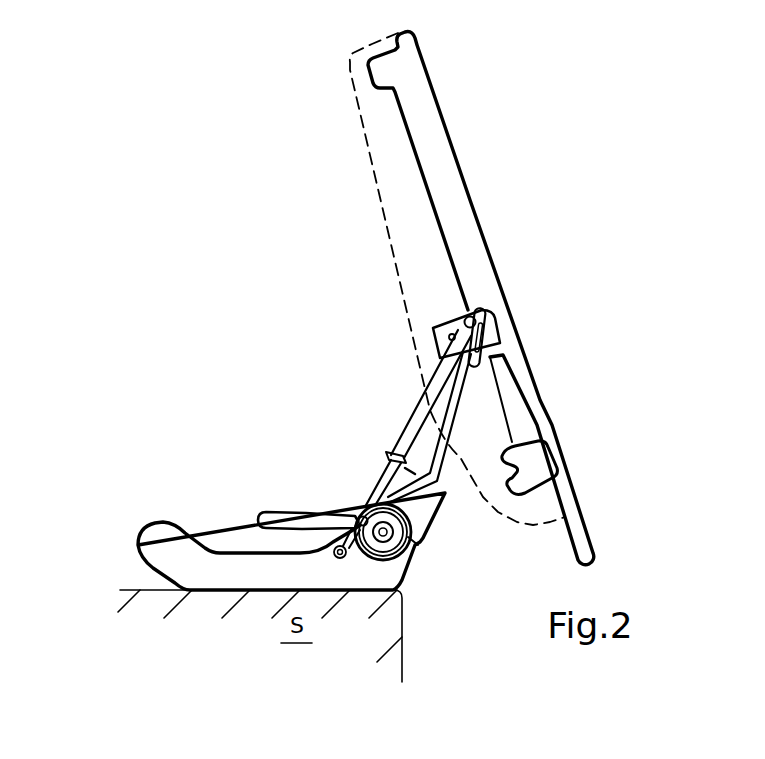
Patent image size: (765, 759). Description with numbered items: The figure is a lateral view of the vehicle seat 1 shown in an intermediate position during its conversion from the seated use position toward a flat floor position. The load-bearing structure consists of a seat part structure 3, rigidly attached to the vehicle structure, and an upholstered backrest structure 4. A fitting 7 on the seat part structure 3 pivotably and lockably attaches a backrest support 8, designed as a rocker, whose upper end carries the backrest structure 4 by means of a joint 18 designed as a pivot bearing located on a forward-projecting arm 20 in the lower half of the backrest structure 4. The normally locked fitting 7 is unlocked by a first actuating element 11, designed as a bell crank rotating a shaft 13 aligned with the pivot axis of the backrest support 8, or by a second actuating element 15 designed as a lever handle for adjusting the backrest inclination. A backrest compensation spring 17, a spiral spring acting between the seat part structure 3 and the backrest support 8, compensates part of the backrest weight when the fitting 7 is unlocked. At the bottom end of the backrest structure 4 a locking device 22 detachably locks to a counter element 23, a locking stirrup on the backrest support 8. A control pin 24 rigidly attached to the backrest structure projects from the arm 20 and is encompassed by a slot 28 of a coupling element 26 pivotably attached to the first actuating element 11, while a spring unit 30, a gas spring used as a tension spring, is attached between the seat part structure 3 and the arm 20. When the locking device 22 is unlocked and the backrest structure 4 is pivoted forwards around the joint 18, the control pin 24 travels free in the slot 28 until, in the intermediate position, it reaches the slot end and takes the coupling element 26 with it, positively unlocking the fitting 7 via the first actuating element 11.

The vehicle seat 1 is at (212, 298).
The seat part structure 3 is at (155, 582).
The backrest structure 4 is at (437, 153).
The fitting 7 is at (388, 563).
The backrest support 8 is at (425, 447).
The first actuating element 11 is at (360, 518).
The shaft 13 is at (408, 537).
The second actuating element 15 is at (255, 516).
The backrest compensation spring 17 is at (412, 512).
The joint 18 is at (445, 333).
The arm 20 is at (433, 327).
The locking device 22 is at (540, 460).
The counter element 23 is at (400, 455).
The control pin 24 is at (493, 313).
The coupling element 26 is at (376, 497).
The slot 28 is at (492, 330).
The spring unit 30 is at (422, 393).